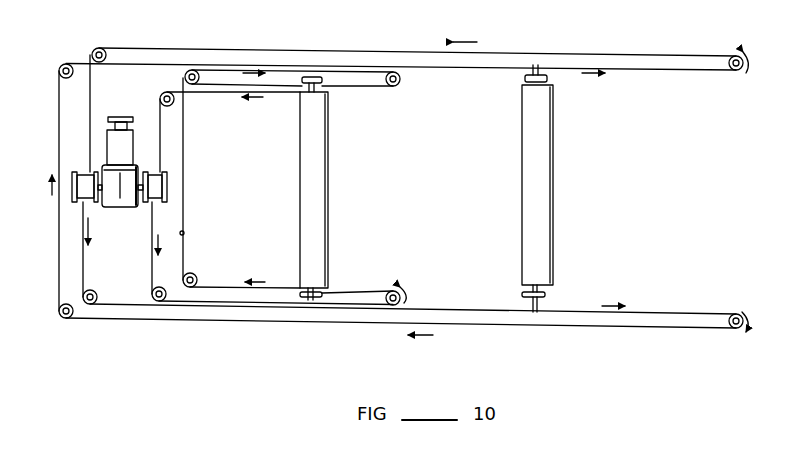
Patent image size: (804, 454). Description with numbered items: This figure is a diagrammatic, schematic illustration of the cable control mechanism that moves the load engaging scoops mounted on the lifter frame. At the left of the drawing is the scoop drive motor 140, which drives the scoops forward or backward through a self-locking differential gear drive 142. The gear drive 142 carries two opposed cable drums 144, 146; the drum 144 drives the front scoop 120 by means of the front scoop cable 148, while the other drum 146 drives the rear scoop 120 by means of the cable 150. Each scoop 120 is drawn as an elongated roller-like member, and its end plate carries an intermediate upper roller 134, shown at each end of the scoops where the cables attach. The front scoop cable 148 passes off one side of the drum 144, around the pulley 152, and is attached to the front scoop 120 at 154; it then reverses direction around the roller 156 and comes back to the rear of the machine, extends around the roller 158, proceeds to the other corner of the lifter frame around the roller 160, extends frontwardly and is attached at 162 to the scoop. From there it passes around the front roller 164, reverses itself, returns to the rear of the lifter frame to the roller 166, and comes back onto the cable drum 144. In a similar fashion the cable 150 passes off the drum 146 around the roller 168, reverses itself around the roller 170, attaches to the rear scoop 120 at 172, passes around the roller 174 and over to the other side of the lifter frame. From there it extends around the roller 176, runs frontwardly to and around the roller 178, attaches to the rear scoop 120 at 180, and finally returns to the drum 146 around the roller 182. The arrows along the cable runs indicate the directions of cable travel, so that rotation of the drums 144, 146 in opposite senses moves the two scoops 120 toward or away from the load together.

The scoop plate 120 is at (426, 186).
The intermediate upper roller 134 is at (570, 290).
The scoop drive motor 140 is at (128, 130).
The self-locking differential gear drive 142 is at (120, 200).
The cable drum 144 is at (73, 178).
The cable drum 146 is at (168, 198).
The front scoop cable 148 is at (58, 120).
The cable 150 is at (185, 231).
The pulley 152 is at (91, 304).
The attachment point 154 is at (535, 312).
The roller 156 is at (737, 328).
The roller 158 is at (62, 318).
The roller 160 is at (66, 64).
The attachment point 162 is at (535, 65).
The front roller 164 is at (738, 56).
The roller 166 is at (104, 48).
The roller 168 is at (160, 301).
The roller 170 is at (395, 290).
The attachment point 172 is at (309, 292).
The roller 174 is at (194, 273).
The roller 176 is at (196, 70).
The roller 178 is at (398, 83).
The attachment point 180 is at (275, 85).
The roller 182 is at (167, 92).